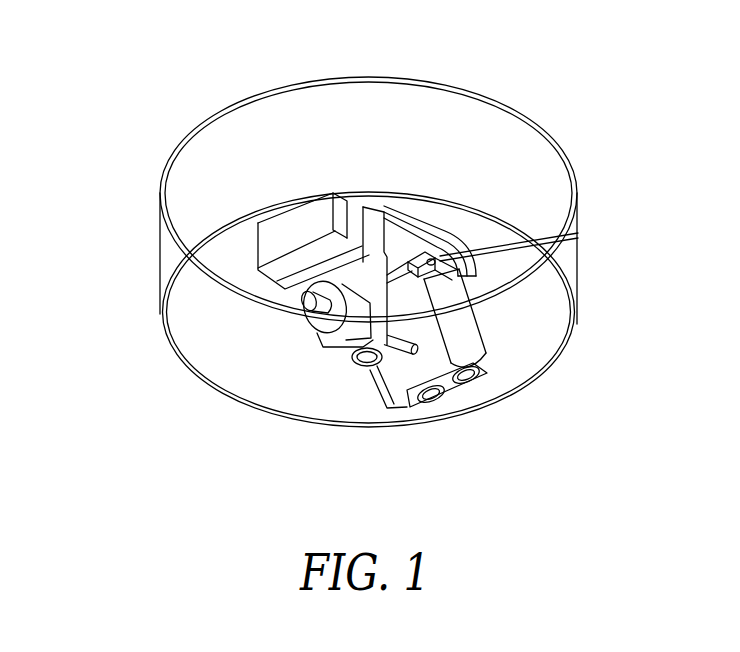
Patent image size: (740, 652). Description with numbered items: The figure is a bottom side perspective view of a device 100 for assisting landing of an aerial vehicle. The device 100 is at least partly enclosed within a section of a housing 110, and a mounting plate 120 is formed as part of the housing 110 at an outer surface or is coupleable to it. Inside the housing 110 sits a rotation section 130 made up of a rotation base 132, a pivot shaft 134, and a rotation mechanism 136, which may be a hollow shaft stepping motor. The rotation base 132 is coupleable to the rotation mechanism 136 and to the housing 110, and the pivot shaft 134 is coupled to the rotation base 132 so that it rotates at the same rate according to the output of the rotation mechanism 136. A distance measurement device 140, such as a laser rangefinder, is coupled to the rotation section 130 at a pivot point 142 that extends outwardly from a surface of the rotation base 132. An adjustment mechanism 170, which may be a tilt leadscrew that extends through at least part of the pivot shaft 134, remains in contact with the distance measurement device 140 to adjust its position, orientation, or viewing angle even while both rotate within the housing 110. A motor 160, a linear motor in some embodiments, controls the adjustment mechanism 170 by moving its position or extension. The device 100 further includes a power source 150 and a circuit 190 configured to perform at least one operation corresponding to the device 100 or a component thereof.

The device 100 is at (104, 400).
The housing 110 is at (175, 243).
The mounting plate 120 is at (343, 77).
The rotation section 130 is at (478, 240).
The rotation base 132 is at (470, 238).
The pivot shaft 134 is at (369, 370).
The rotation mechanism 136 is at (452, 220).
The distance measurement device 140 is at (545, 238).
The pivot point 142 is at (478, 344).
The power source 150 is at (372, 222).
The motor 160 is at (337, 333).
The adjustment mechanism 170 is at (403, 352).
The circuit 190 is at (277, 242).